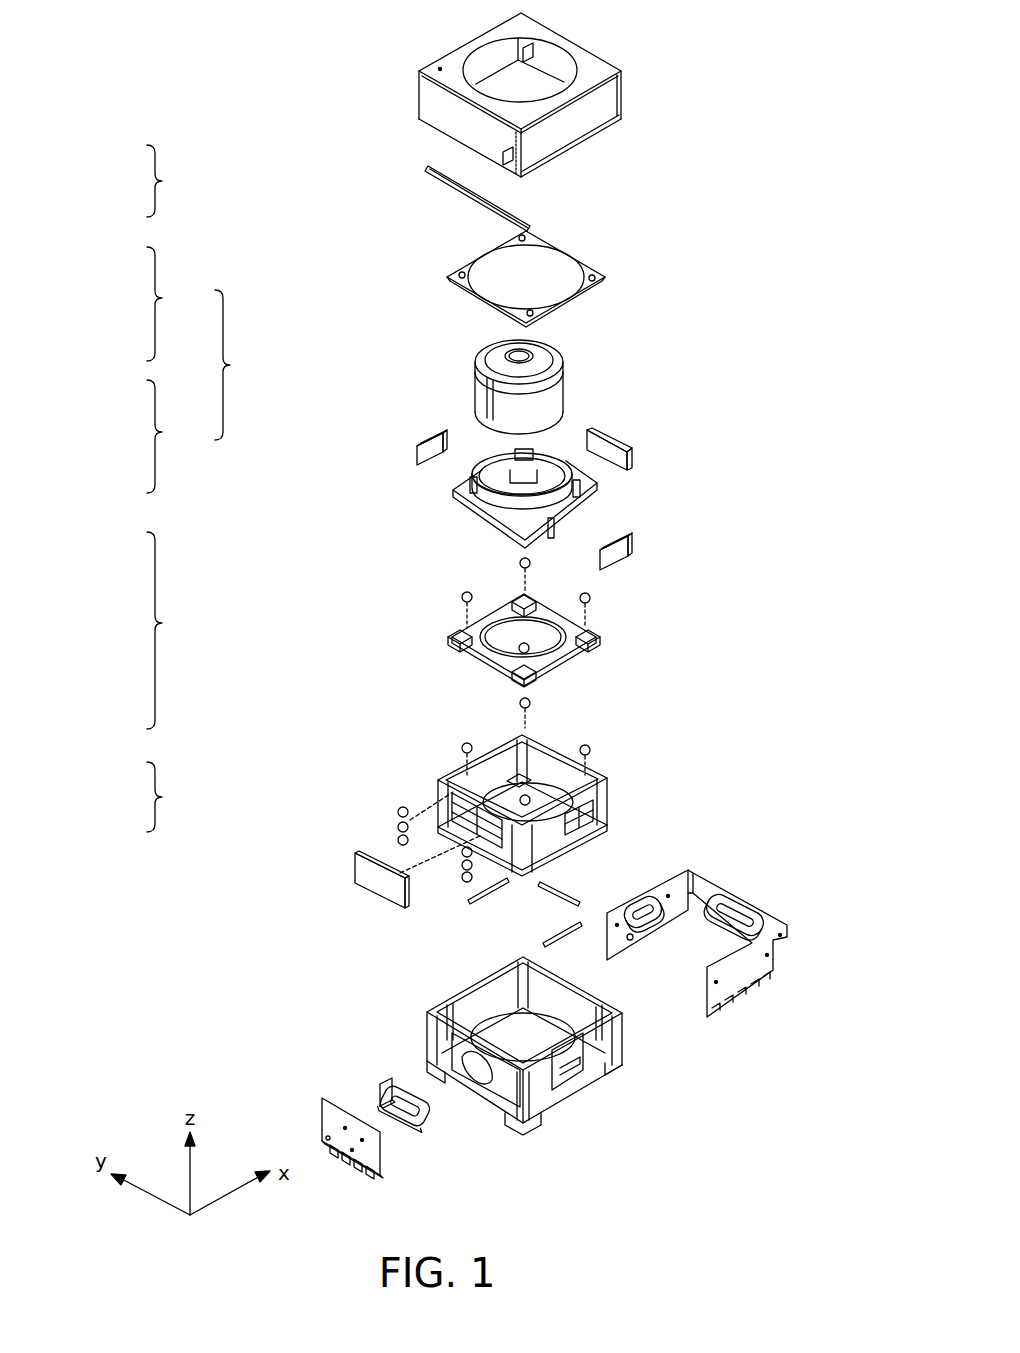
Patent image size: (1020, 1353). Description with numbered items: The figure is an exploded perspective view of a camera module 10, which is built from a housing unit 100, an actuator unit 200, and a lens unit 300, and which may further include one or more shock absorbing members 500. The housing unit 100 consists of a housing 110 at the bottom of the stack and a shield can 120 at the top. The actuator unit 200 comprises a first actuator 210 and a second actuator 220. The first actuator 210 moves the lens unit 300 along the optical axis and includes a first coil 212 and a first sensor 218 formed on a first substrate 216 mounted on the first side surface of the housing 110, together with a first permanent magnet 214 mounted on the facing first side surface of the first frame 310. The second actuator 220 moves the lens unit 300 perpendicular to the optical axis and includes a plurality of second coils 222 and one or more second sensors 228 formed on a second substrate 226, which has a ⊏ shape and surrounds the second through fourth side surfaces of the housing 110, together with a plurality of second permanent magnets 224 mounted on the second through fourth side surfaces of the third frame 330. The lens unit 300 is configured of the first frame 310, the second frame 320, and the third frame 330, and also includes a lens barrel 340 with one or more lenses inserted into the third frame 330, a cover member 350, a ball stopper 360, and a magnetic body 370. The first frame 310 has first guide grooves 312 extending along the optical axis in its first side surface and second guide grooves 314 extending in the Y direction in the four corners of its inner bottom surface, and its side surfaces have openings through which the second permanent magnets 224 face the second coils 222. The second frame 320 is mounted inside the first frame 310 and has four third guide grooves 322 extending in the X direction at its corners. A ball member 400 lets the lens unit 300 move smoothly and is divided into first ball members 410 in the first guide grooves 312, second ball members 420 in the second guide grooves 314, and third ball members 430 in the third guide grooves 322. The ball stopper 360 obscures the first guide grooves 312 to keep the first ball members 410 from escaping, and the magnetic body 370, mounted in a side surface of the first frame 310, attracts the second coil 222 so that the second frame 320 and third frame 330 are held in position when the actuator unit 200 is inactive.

The camera module 10 is at (766, 337).
The housing unit 100 is at (178, 181).
The housing 110 is at (548, 1092).
The shield can 120 is at (438, 100).
The actuator unit 200 is at (245, 365).
The first actuator 210 is at (178, 304).
The first coil 212 is at (374, 1113).
The first permanent magnet 214 is at (356, 870).
The first substrate 216 is at (327, 1120).
The first sensor 218 is at (373, 1090).
The second actuator 220 is at (178, 436).
The second coil 222 is at (697, 924).
The second permanent magnet 224 is at (632, 547).
The second substrate 226 is at (622, 950).
The second sensor 228 is at (640, 927).
The lens unit 300 is at (178, 630).
The first frame 310 is at (570, 823).
The first guide groove 312 is at (517, 873).
The second guide groove 314 is at (532, 736).
The second frame 320 is at (575, 640).
The third guide groove 322 is at (600, 636).
The third frame 330 is at (477, 517).
The lens barrel 340 is at (480, 410).
The cover member 350 is at (574, 263).
The ball stopper 360 is at (428, 170).
The magnetic body 370 is at (468, 903).
The ball member 400 is at (178, 797).
The first ball member 410 is at (402, 808).
The second ball member 420 is at (462, 748).
The third ball member 430 is at (462, 596).
The shock absorbing member 500 is at (596, 279).